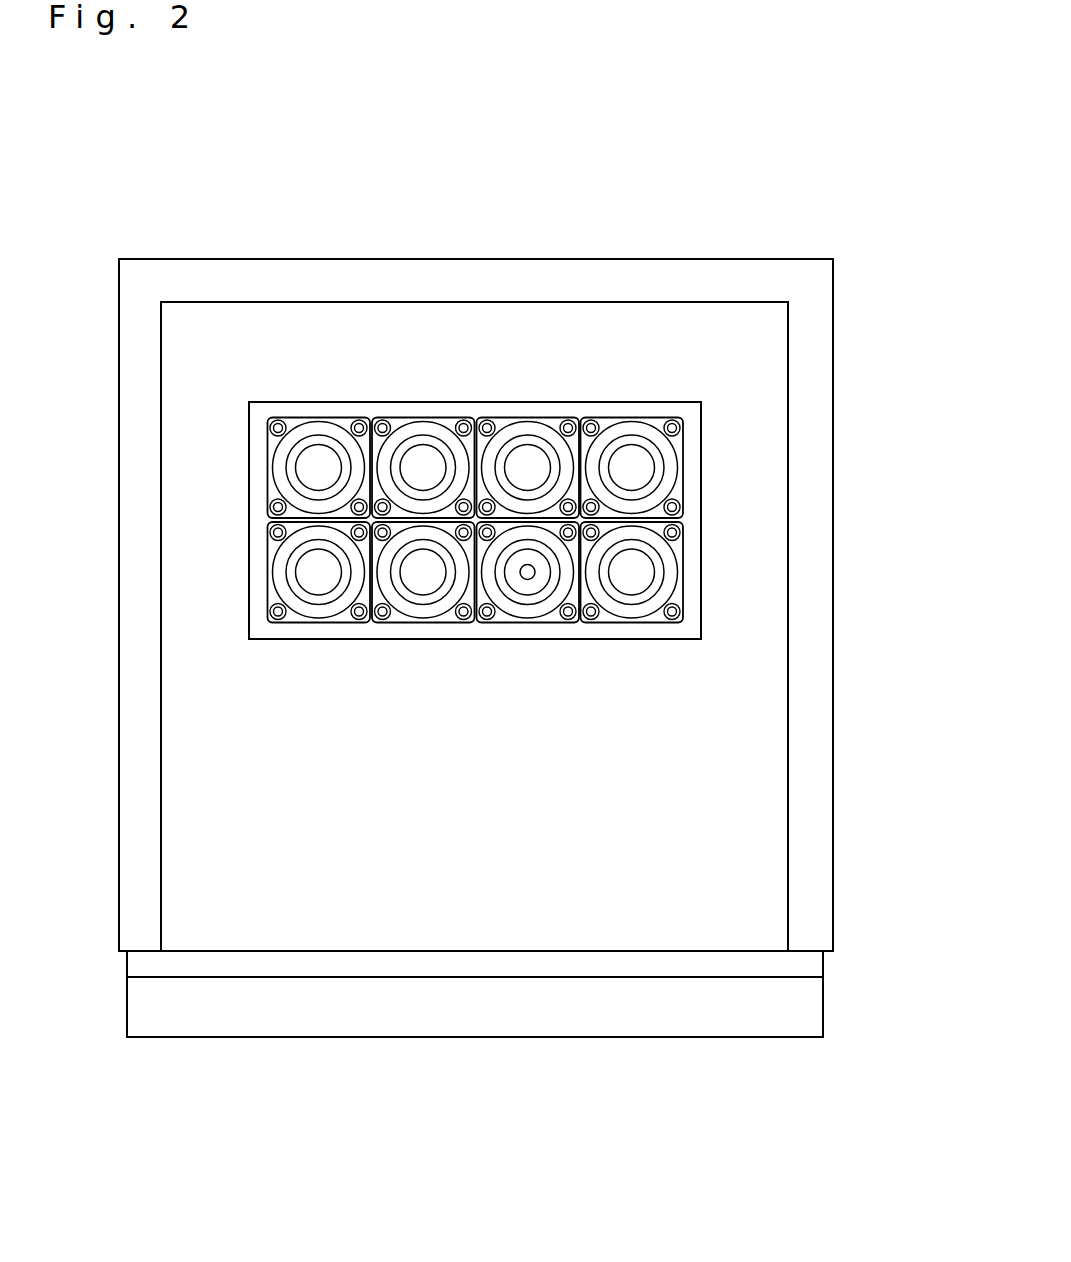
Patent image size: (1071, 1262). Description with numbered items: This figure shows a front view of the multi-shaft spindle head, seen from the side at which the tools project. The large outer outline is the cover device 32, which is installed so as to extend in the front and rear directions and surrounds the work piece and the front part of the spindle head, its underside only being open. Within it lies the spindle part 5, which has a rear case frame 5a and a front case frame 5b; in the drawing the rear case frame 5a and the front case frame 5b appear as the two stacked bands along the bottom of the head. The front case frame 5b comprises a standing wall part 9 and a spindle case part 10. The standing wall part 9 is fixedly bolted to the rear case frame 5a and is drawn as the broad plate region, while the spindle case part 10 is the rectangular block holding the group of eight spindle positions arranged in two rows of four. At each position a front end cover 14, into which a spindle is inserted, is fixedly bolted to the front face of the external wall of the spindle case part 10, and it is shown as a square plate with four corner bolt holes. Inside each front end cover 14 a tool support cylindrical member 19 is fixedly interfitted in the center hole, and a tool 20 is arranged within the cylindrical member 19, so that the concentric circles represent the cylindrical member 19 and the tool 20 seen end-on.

The cover device 32 is at (473, 260).
The standing wall part 9 is at (557, 753).
The spindle case part 10 is at (475, 516).
The tool 20 is at (317, 453).
The tool support cylindrical member 19 is at (542, 423).
The front end cover 14 is at (655, 425).
The spindle part 5 is at (527, 1012).
The rear case frame 5a is at (555, 1015).
The front case frame 5b is at (432, 905).